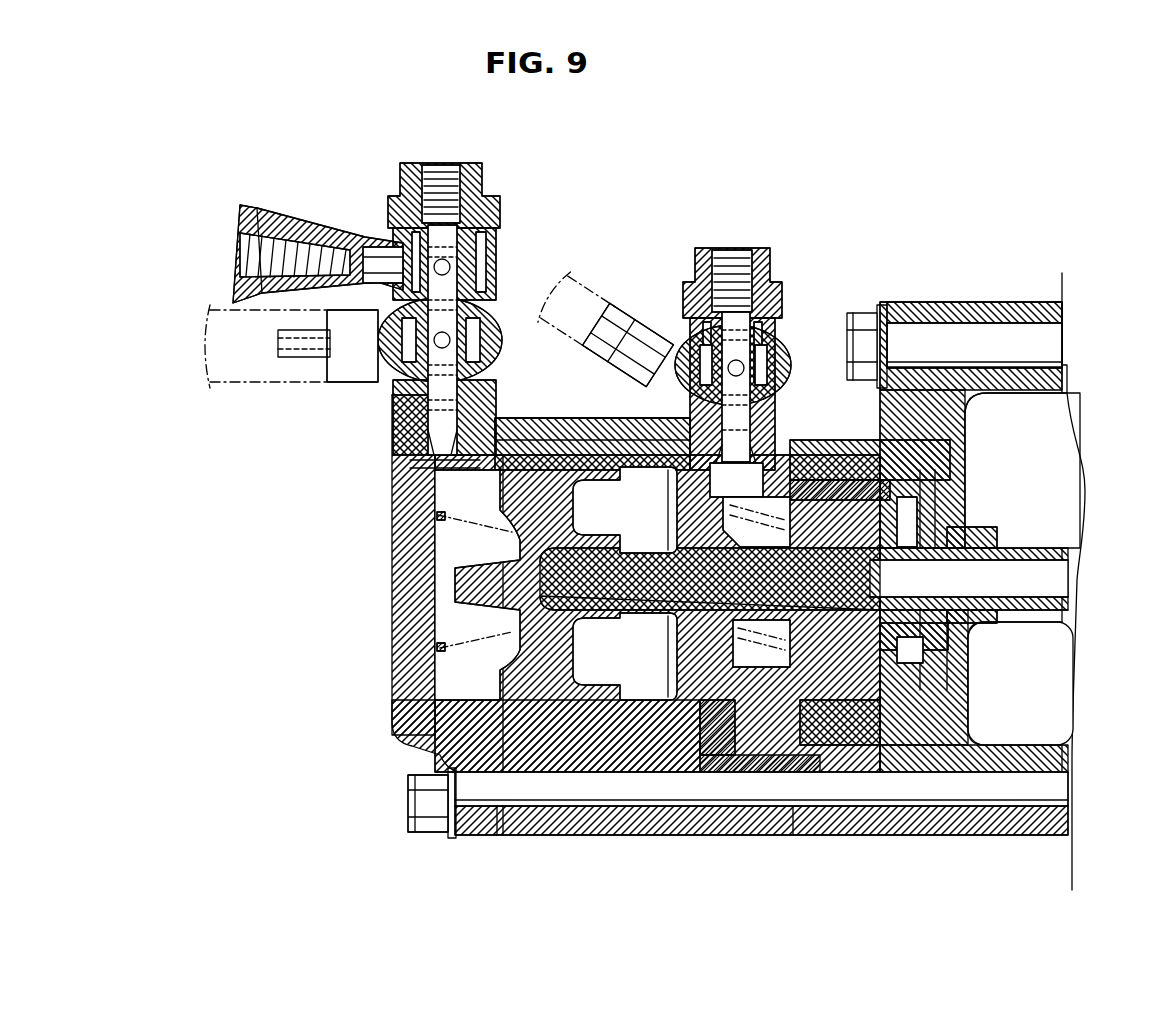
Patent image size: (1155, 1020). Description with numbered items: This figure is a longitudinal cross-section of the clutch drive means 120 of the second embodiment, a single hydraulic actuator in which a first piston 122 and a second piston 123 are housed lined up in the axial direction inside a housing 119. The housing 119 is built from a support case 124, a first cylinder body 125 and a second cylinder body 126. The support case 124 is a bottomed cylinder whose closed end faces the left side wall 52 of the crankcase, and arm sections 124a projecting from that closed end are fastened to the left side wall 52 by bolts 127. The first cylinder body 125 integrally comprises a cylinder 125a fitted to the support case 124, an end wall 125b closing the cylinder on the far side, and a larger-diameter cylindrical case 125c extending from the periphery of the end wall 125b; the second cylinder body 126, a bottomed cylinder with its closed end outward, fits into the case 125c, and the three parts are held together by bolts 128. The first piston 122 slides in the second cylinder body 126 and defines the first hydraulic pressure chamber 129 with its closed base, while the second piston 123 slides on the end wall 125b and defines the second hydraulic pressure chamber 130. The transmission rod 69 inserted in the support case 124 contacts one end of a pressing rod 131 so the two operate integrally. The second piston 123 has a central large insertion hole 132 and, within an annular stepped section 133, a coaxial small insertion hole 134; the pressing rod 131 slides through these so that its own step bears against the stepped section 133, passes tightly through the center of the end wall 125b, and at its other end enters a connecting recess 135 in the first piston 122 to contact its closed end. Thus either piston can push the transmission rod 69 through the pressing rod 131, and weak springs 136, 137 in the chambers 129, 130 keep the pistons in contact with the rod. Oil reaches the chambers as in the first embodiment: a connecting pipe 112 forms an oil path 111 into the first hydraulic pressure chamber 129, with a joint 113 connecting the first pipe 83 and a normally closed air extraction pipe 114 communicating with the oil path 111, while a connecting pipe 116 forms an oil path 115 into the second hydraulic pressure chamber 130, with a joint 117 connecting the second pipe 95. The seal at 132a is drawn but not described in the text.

The left side wall 52 is at (912, 302).
The transmission rod 69 is at (1062, 550).
The first pipe 83 is at (248, 385).
The second pipe 95 is at (623, 292).
The oil path 111 is at (413, 462).
The connecting pipe 112 is at (490, 212).
The joint 113 is at (387, 373).
The air extraction pipe 114 is at (305, 226).
The oil path 115 is at (788, 352).
The connecting pipe 116 is at (760, 250).
The joint 117 is at (777, 327).
The housing 119 is at (948, 837).
The clutch drive means 120 is at (392, 742).
The first piston 122 is at (503, 607).
The second piston 123 is at (545, 436).
The support case 124 is at (947, 433).
The arm sections 124a is at (1030, 302).
The first cylinder body 125 is at (740, 835).
The cylinder 125a is at (947, 680).
The end wall 125b is at (683, 650).
The cylindrical case 125c is at (612, 445).
The second cylinder body 126 is at (398, 578).
The bolts 127 is at (990, 338).
The bolts 128 is at (592, 805).
The first hydraulic pressure chamber 129 is at (443, 687).
The second hydraulic pressure chamber 130 is at (807, 700).
The pressing rod 131 is at (903, 620).
The large insertion hole 132 is at (917, 543).
The seal ring 132a is at (790, 445).
The annular stepped section 133 is at (873, 583).
The small insertion hole 134 is at (710, 579).
The connecting recess 135 is at (603, 553).
The spring 136 is at (437, 653).
The spring 137 is at (740, 663).